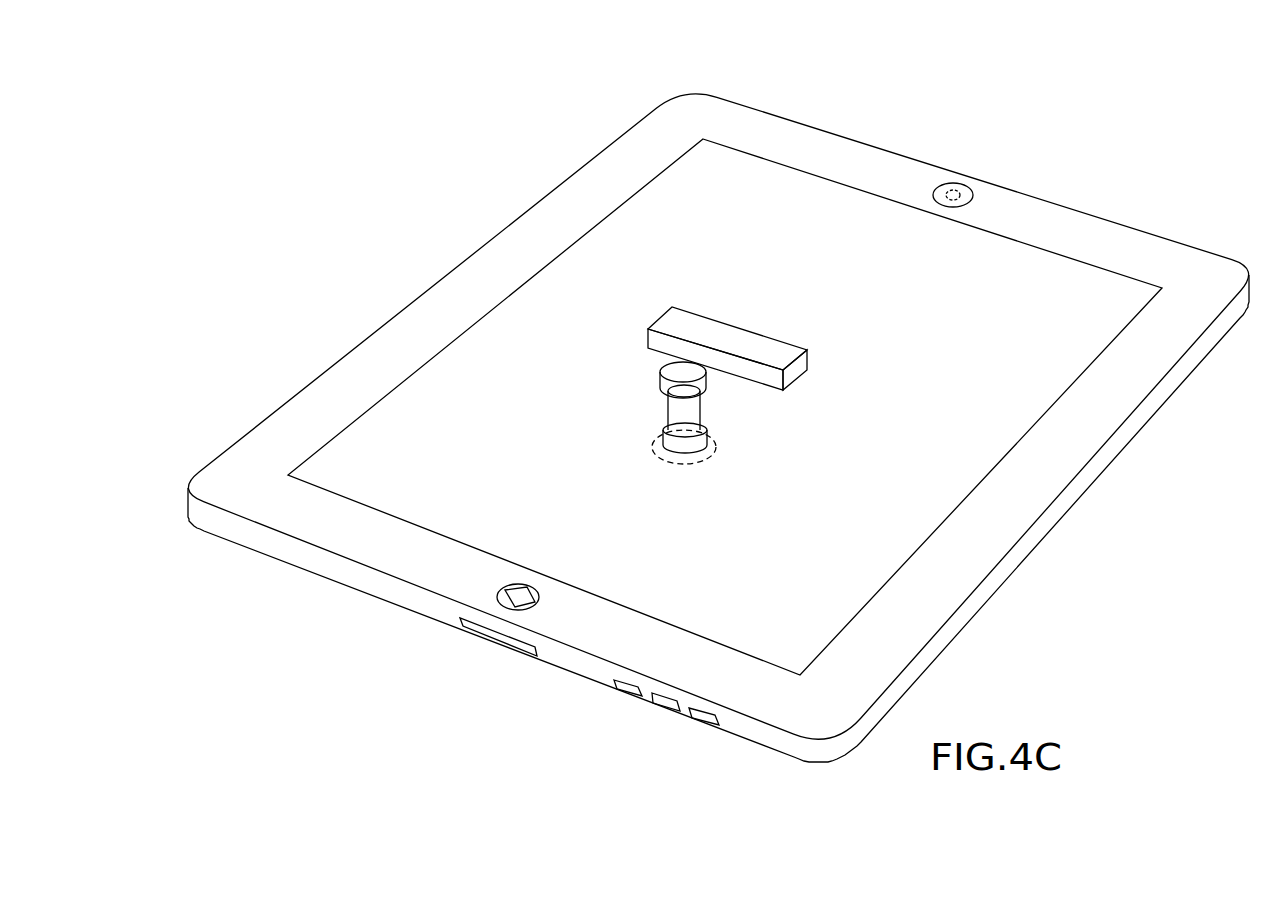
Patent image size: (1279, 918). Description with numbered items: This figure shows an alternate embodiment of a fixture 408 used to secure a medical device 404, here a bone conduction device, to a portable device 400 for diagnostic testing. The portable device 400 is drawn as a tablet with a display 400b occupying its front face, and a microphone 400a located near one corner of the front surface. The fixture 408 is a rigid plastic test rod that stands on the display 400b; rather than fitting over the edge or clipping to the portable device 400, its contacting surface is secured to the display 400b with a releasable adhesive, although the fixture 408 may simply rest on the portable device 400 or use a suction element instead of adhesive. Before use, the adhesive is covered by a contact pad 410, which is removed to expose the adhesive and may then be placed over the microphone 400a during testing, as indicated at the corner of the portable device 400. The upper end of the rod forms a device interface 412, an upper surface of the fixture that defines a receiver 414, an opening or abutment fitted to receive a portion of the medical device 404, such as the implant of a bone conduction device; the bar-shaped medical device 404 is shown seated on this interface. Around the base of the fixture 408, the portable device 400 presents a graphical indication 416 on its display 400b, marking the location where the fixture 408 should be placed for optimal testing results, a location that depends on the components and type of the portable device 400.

The portable device 400 is at (893, 135).
The microphone 400a is at (955, 195).
The display 400b is at (1037, 388).
The contact pad 410 is at (972, 195).
The medical device 404 is at (708, 320).
The fixture 408 is at (707, 383).
The device interface 412 is at (668, 365).
The receiver 414 is at (692, 365).
The graphical indication 416 is at (708, 457).